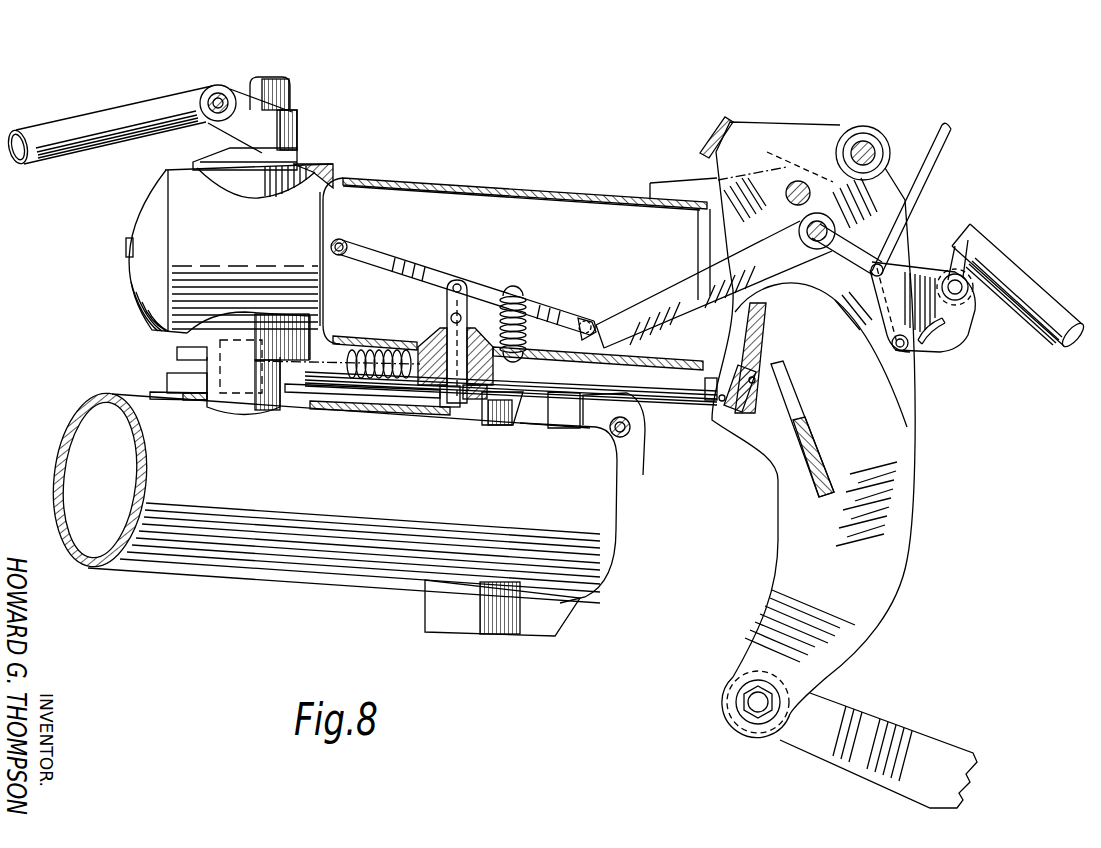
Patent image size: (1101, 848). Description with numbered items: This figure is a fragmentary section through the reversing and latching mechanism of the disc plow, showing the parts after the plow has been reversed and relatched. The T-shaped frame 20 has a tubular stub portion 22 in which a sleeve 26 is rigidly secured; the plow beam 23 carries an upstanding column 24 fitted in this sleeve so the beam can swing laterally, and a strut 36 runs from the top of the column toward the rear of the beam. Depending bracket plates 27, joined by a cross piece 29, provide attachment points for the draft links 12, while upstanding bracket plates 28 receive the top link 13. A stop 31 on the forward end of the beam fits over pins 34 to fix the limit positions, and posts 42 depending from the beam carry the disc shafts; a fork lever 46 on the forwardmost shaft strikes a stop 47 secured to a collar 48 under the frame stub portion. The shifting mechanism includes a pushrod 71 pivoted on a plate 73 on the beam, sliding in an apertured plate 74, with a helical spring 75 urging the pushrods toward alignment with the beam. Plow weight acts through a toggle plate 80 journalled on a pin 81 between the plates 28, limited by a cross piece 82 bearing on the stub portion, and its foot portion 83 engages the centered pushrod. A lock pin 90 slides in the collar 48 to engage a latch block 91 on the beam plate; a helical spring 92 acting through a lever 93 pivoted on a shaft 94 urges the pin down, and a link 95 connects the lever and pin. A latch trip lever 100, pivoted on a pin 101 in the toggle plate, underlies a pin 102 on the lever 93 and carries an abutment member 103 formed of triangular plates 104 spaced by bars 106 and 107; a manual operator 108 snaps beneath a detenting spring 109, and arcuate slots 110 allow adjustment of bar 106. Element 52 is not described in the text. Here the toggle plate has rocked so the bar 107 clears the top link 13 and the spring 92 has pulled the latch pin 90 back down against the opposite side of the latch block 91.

The draft links 12 is at (932, 740).
The top link 13 is at (1045, 300).
The T-shaped frame 20 is at (572, 186).
The stub portion 22 is at (460, 183).
The plow beam 23 is at (320, 568).
The column 24 is at (268, 77).
The sleeve 26 is at (320, 173).
The bracket plates 27 is at (870, 600).
The bracket plates 28 is at (672, 184).
The cross piece 29 is at (813, 432).
The stop 31 is at (612, 475).
The pins 34 is at (628, 430).
The strut 36 is at (75, 150).
The posts 42 is at (425, 615).
The fork lever 46 is at (515, 426).
The stop 47 is at (478, 400).
The collar 48 is at (425, 335).
The plate 52 is at (560, 400).
The pushrod 71 is at (664, 395).
The plate 73 is at (320, 412).
The apertured plate 74 is at (718, 398).
The helical spring 75 is at (380, 350).
The toggle plate 80 is at (826, 130).
The pin 81 is at (800, 182).
The cross piece 82 is at (712, 118).
The foot portion 83 is at (754, 408).
The lock pin 90 is at (447, 406).
The latch block 91 is at (390, 398).
The helical spring 92 is at (527, 300).
The lever 93 is at (428, 262).
The shaft 94 is at (346, 242).
The link 95 is at (462, 290).
The latch trip lever 100 is at (680, 300).
The pin 101 is at (816, 249).
The pin 102 is at (583, 322).
The abutment member 103 is at (956, 341).
The plate 104 is at (955, 307).
The bar 106 is at (905, 352).
The bar 107 is at (950, 276).
The manual operator 108 is at (935, 140).
The detenting spring 109 is at (877, 263).
The arcuate slots 110 is at (938, 332).